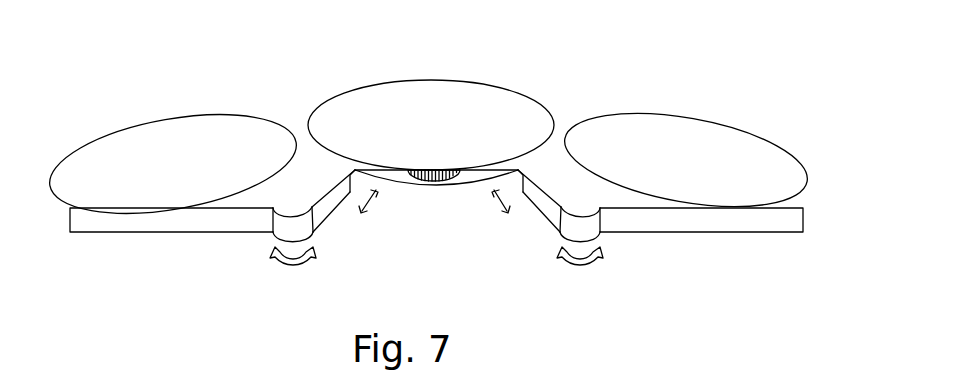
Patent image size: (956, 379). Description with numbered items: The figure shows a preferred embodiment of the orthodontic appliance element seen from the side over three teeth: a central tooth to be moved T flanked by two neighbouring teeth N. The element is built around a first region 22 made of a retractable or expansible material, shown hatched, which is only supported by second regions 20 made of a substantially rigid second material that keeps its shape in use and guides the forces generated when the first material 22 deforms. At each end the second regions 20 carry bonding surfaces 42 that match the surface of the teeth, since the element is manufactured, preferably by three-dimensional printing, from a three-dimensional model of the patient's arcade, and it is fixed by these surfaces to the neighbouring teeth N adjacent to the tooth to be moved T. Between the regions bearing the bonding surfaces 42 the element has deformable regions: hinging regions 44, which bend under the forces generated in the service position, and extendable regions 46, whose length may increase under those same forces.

The tooth to be moved T is at (445, 112).
The neighbouring teeth N is at (693, 135).
The second region in a second material 20 is at (449, 213).
The first region in a retractable or expansible material 22 is at (427, 187).
The bonding surfaces 42 is at (740, 210).
The hinging regions 44 is at (567, 223).
The extendable regions 46 is at (360, 186).